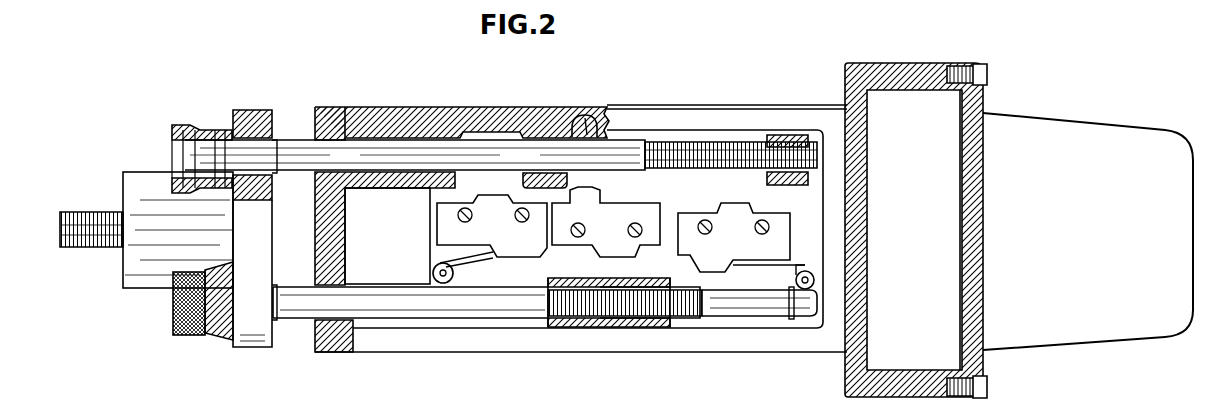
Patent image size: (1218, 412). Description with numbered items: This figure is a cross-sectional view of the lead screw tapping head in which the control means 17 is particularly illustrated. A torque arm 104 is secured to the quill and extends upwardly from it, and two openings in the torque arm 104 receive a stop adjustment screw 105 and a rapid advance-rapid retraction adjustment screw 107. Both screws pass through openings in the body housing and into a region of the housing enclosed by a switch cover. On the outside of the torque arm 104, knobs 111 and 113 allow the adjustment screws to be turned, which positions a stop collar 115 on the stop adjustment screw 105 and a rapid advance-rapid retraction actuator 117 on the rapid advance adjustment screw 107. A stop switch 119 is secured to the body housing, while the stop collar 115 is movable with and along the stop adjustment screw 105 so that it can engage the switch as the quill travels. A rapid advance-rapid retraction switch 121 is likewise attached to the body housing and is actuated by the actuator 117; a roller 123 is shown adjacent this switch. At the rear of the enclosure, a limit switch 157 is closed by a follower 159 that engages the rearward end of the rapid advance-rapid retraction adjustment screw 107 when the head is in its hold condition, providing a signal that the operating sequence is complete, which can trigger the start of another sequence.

The control means 17 is at (582, 127).
The torque arm 104 is at (250, 323).
The stop adjustment screw 105 is at (293, 145).
The rapid advance-rapid retraction adjustment screw 107 is at (295, 305).
The knob 111 is at (173, 127).
The knob 113 is at (173, 333).
The stop collar 115 is at (790, 135).
The rapid advance-rapid retraction actuator 117 is at (627, 325).
The stop switch 119 is at (605, 217).
The rapid advance-rapid retraction switch 121 is at (488, 207).
The roller actuator 123 is at (438, 257).
The limit switch 157 is at (735, 217).
The follower 159 is at (808, 273).